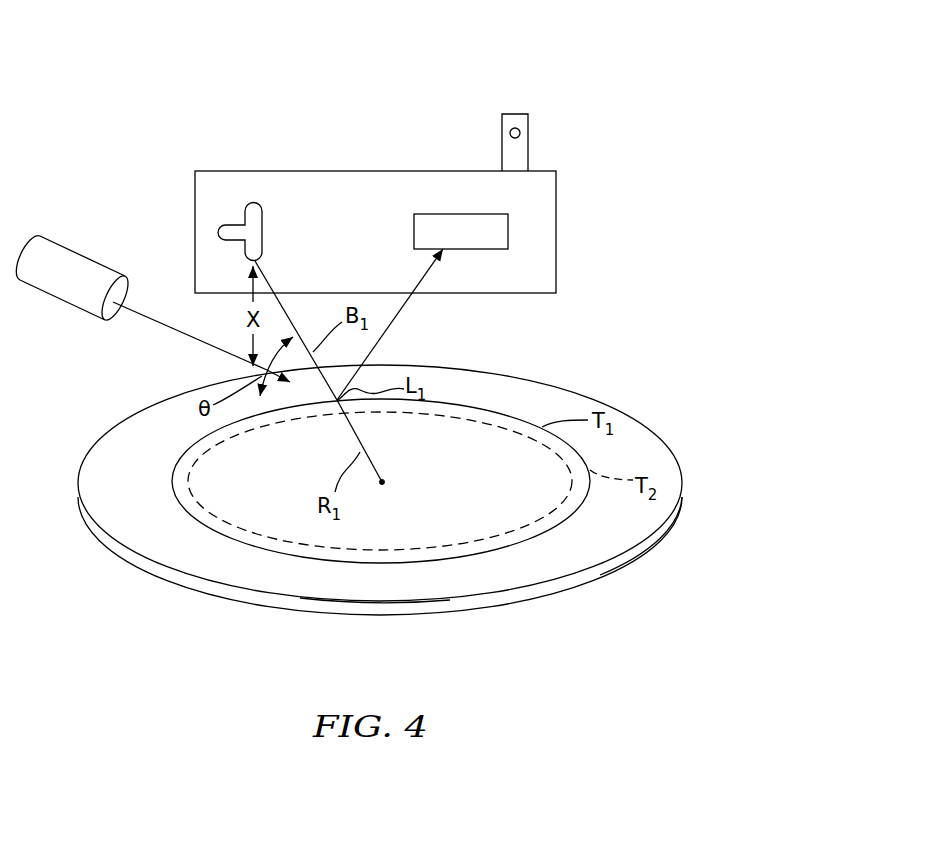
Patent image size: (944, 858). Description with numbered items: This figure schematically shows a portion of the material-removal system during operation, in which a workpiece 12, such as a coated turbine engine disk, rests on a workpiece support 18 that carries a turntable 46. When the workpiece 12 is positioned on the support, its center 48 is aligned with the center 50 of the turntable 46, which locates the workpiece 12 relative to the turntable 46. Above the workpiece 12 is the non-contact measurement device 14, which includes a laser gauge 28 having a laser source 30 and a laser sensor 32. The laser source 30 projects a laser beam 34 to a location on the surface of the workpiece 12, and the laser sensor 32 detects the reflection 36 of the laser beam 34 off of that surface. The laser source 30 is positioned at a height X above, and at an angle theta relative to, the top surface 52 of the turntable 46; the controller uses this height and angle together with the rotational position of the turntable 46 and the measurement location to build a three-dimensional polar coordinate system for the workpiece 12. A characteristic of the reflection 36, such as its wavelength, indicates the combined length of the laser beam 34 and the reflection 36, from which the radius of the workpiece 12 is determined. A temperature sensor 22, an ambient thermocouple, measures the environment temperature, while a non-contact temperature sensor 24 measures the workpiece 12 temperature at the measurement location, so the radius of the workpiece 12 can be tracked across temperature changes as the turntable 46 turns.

The non-contact measurement device 14 is at (209, 130).
The laser gauge 28 is at (383, 190).
The temperature sensor 22 is at (520, 133).
The laser source 30 is at (256, 232).
The laser sensor 32 is at (492, 224).
The temperature sensor 24 is at (68, 266).
The laser beam 34 is at (293, 335).
The reflection 36 is at (422, 280).
The workpiece support 18 is at (102, 470).
The turntable 46 is at (657, 537).
The top surface 52 is at (447, 585).
The workpiece 12 is at (263, 509).
The center 48 is at (383, 483).
The center 50 is at (383, 483).